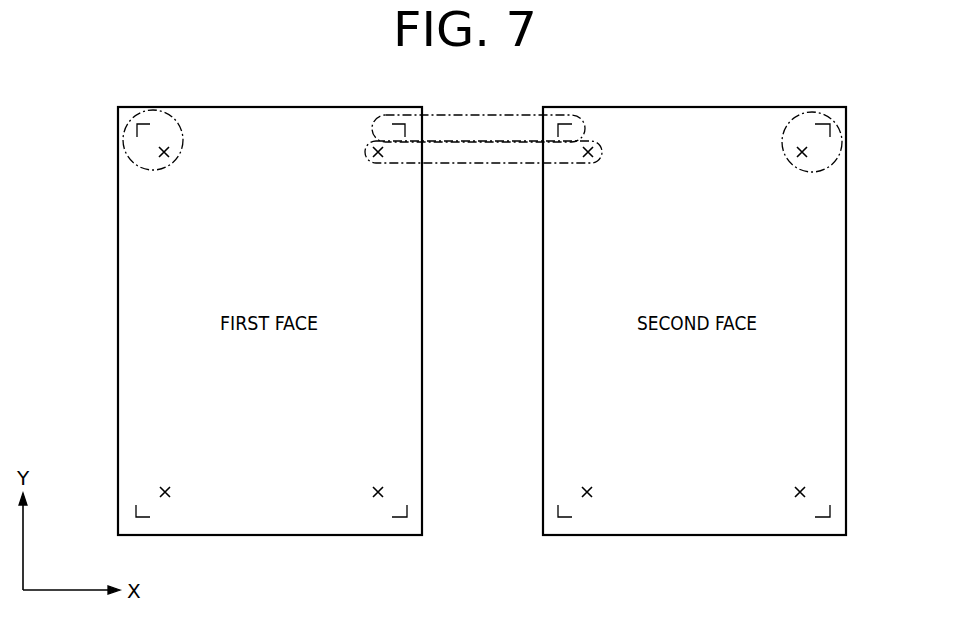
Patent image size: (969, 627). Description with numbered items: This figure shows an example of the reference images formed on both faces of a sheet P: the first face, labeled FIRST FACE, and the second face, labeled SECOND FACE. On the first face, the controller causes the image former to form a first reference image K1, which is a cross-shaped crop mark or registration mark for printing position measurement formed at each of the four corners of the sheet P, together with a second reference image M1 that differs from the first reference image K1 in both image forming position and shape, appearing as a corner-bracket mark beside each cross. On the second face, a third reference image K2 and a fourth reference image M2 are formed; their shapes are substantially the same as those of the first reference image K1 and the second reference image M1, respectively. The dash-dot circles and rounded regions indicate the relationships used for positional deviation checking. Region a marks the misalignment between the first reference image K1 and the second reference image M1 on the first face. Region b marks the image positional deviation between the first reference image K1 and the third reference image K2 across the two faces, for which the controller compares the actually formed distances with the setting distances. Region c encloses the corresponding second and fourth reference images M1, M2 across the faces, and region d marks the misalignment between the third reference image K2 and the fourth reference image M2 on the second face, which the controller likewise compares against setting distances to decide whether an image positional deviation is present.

The sheet P is at (422, 197).
The misalignment of first and second reference images a is at (137, 165).
The image positional deviation between first and third reference images b is at (502, 164).
The register mark region c is at (500, 115).
The misalignment of third and fourth reference images d is at (840, 128).
The first reference image K1 is at (385, 492).
The second reference image M1 is at (408, 510).
The third reference image K2 is at (807, 492).
The fourth reference image M2 is at (831, 510).